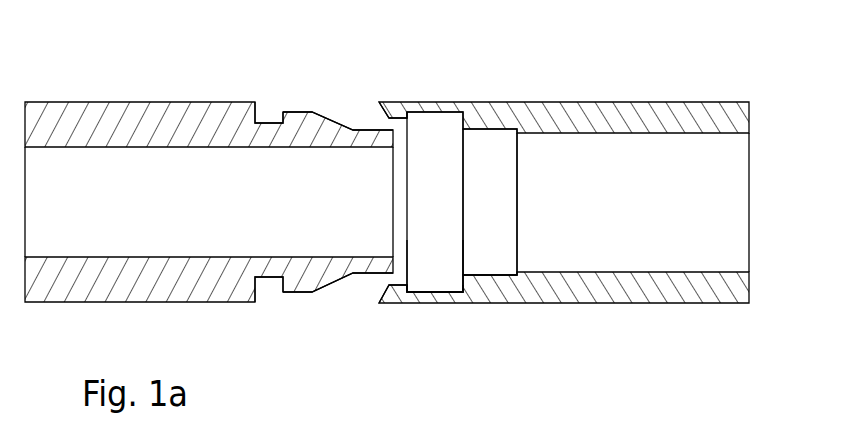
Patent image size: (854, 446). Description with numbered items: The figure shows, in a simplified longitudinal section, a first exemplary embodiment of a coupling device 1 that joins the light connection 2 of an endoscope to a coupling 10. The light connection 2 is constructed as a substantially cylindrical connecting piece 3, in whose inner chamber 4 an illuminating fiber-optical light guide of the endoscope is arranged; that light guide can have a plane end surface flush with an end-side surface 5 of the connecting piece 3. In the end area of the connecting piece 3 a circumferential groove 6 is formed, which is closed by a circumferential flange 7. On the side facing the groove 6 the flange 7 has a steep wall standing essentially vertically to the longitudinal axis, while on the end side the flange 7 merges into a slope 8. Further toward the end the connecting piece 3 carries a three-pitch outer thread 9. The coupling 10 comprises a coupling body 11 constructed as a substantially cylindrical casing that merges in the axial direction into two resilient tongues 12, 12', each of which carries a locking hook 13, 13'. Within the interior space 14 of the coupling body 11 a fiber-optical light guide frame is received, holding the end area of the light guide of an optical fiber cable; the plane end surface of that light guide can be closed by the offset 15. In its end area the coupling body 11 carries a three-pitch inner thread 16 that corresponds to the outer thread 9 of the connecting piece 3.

The coupling device 1 is at (364, 36).
The light connection 2 is at (218, 72).
The connecting piece 3 is at (80, 108).
The inner chamber 4 is at (83, 215).
The end-side surface 5 is at (393, 265).
The circumferential groove 6 is at (271, 108).
The circumferential flange 7 is at (290, 292).
The slope 8 is at (330, 282).
The three-pitch outer thread 9 is at (345, 112).
The coupling 10 is at (524, 60).
The coupling body 11 is at (605, 108).
The resilient tongue 12 is at (435, 146).
The resilient tongue 12' is at (456, 337).
The locking hook 13 is at (396, 72).
The locking hook 13' is at (403, 337).
The interior space 14 is at (643, 233).
The offset 15 is at (530, 283).
The three-pitch inner thread 16 is at (495, 108).